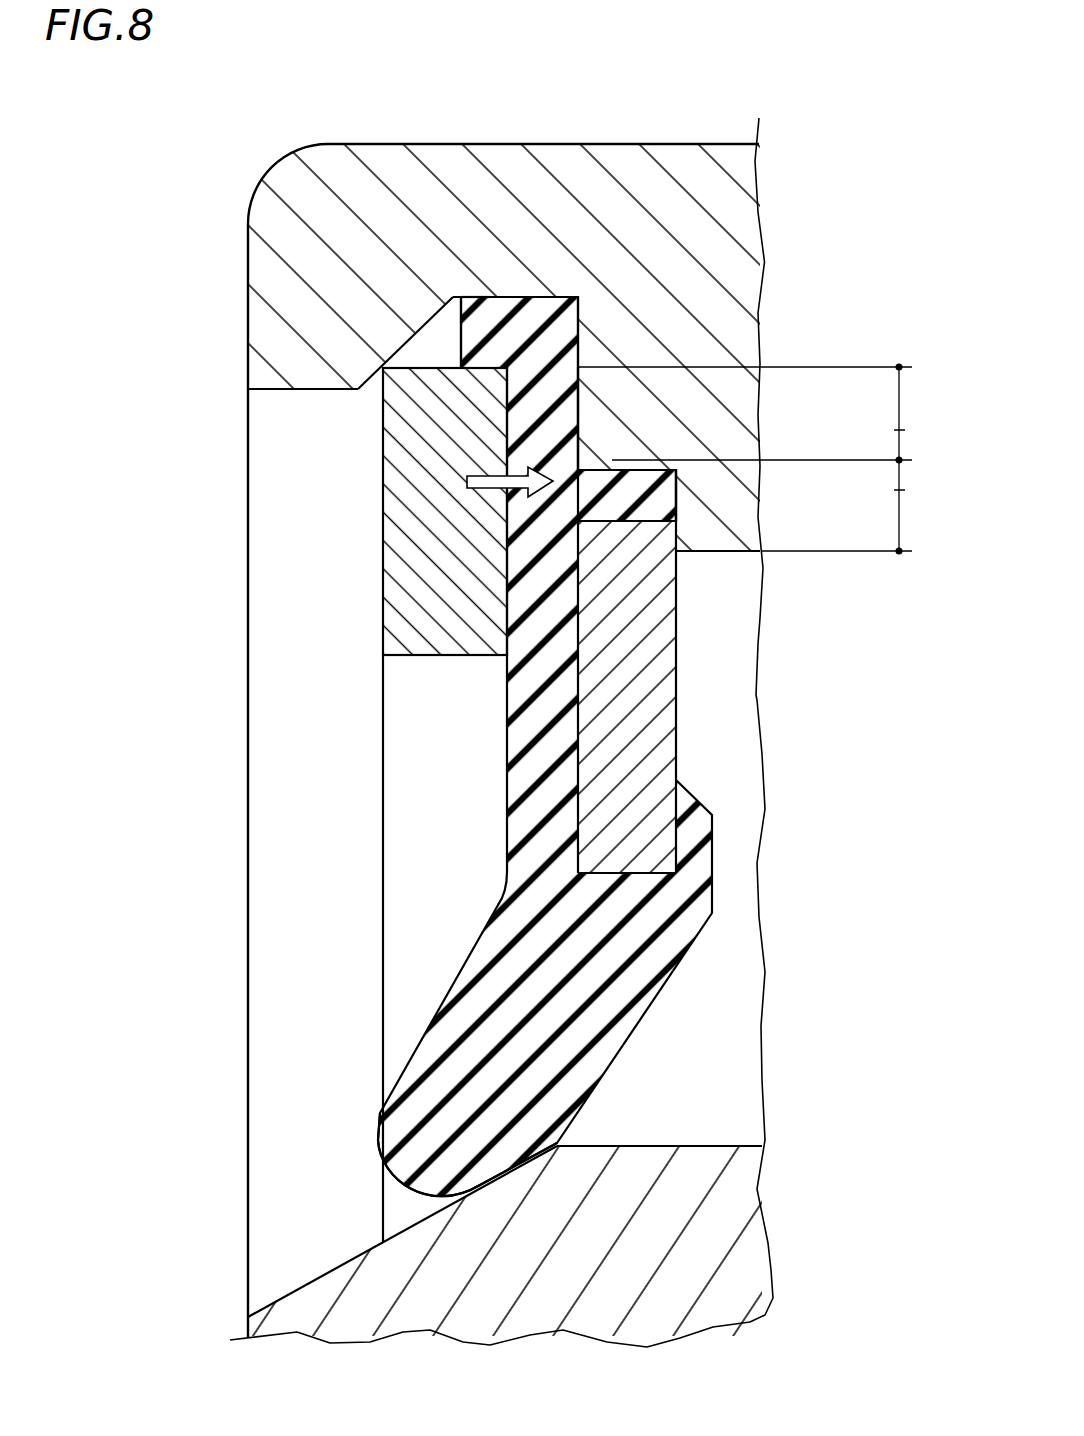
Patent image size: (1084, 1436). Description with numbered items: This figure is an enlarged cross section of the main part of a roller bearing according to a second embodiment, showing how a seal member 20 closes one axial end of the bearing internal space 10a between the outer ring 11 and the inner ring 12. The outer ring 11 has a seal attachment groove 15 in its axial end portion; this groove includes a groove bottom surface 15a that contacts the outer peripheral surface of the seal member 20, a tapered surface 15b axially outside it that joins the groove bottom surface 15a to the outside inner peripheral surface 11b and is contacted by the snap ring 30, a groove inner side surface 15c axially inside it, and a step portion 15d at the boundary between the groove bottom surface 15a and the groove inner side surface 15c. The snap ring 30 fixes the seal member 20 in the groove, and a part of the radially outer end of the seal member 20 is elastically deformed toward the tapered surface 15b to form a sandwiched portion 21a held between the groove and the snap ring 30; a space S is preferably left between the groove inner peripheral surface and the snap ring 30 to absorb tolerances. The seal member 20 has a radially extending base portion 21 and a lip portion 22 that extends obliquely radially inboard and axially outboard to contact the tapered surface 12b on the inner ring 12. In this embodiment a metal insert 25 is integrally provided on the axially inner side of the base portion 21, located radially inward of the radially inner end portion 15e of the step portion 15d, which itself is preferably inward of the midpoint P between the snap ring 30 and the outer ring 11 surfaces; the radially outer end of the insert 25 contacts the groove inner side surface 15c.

The outer ring 11 is at (672, 203).
The outside inner peripheral surface 11b is at (303, 393).
The inner ring 12 is at (692, 1226).
The tapered surface 12b is at (337, 1262).
The bearing internal space 10a is at (735, 766).
The seal attachment groove 15 is at (580, 330).
The groove bottom surface 15a is at (552, 306).
The tapered surface 15b is at (450, 306).
The groove inner side surface 15c is at (675, 575).
The step portion 15d is at (605, 445).
The radially inner end portion 15e is at (670, 505).
The seal member 20 is at (497, 742).
The base portion 21 is at (545, 580).
The sandwiched portion 21a is at (472, 306).
The lip portion 22 is at (477, 1084).
The metal insert 25 is at (657, 663).
The snap ring 30 is at (403, 503).
The space S is at (423, 353).
The midpoint P is at (903, 454).